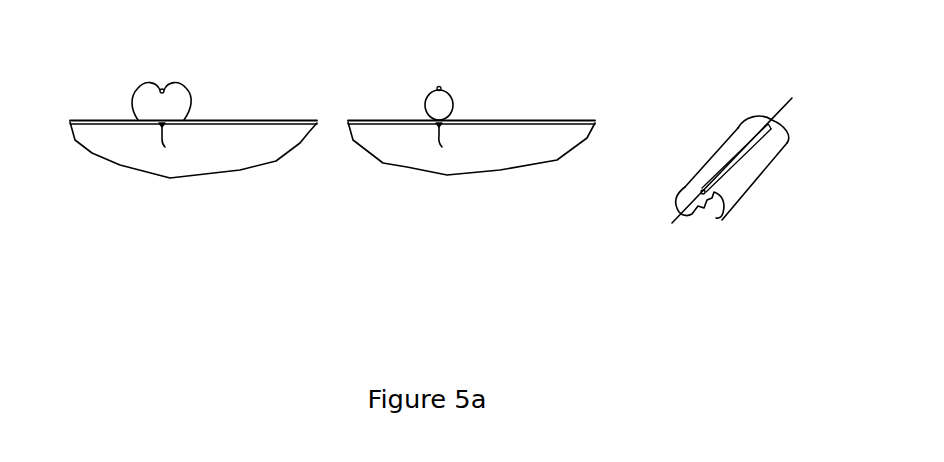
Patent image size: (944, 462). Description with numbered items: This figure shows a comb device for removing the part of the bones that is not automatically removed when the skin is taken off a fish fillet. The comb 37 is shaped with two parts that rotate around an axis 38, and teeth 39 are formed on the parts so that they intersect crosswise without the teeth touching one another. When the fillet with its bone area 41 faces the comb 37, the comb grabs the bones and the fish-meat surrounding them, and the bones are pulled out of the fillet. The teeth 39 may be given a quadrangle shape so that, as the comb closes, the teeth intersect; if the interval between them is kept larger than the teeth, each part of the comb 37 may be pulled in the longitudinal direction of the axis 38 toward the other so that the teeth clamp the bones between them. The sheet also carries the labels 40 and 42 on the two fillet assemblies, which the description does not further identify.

The comb 37 is at (719, 185).
The axis 38 is at (793, 112).
The teeth 39 is at (695, 203).
The heart-shaped clasp assembly 40 is at (193, 139).
The bone area 41 is at (155, 150).
The round clasp assembly 42 is at (471, 97).